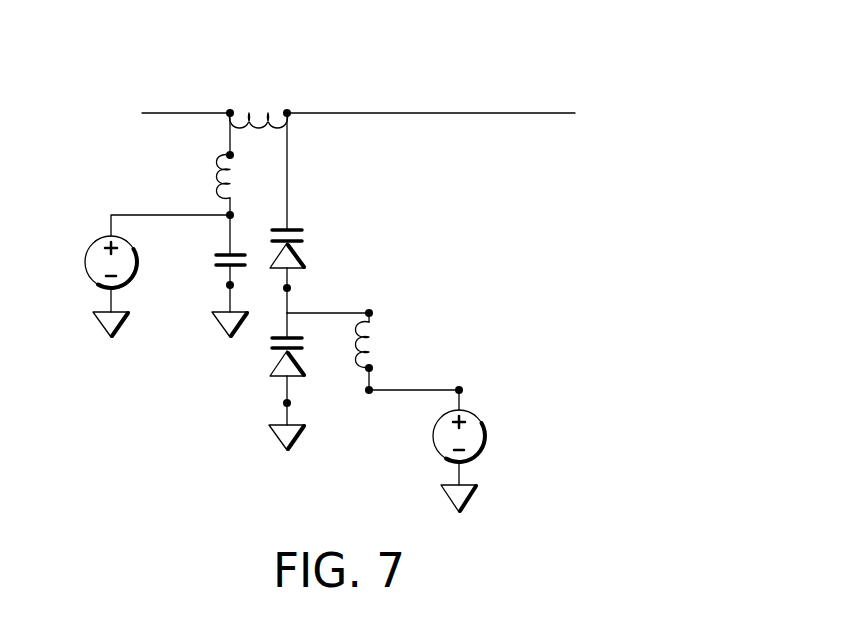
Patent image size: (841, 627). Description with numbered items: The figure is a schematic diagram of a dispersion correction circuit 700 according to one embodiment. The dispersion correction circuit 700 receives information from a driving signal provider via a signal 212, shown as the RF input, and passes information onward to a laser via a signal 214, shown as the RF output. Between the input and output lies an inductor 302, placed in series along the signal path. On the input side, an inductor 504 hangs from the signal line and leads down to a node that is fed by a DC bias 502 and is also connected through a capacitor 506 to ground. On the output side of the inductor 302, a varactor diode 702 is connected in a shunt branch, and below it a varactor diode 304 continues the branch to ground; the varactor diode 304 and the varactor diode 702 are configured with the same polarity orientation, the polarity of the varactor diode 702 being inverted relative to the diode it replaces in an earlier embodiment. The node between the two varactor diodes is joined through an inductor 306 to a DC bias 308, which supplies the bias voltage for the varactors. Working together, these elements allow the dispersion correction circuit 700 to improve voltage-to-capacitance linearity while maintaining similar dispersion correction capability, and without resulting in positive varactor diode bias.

The dispersion correction circuit 700 is at (672, 50).
The signal 212 is at (186, 117).
The signal 214 is at (494, 115).
The inductor 302 is at (277, 98).
The inductor 504 is at (217, 186).
The DC bias 502 is at (100, 240).
The capacitor 506 is at (216, 262).
The varactor diode 702 is at (292, 235).
The varactor diode 304 is at (273, 362).
The inductor 306 is at (388, 321).
The DC bias 308 is at (433, 436).